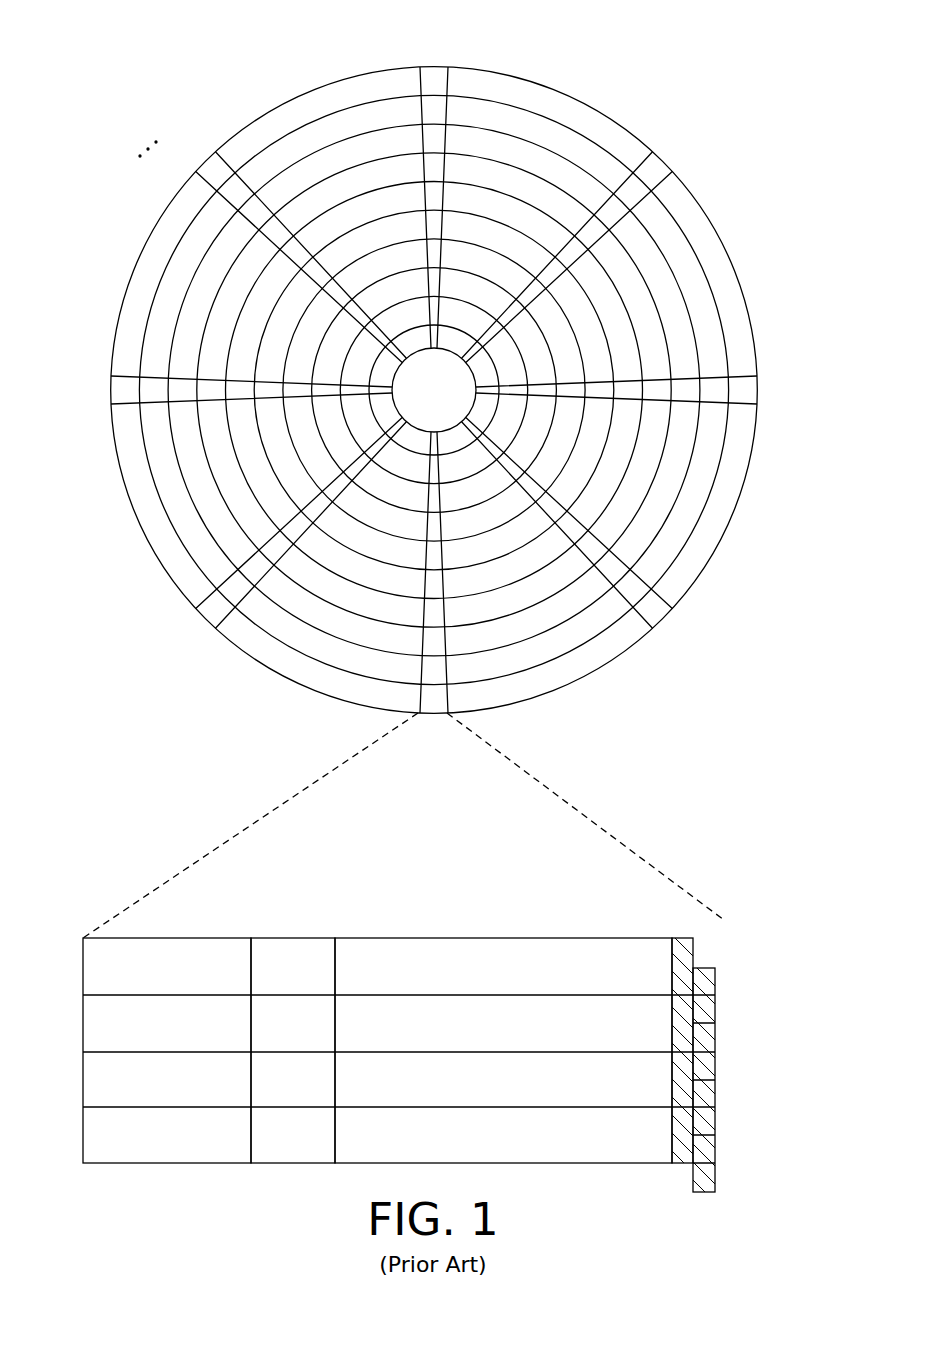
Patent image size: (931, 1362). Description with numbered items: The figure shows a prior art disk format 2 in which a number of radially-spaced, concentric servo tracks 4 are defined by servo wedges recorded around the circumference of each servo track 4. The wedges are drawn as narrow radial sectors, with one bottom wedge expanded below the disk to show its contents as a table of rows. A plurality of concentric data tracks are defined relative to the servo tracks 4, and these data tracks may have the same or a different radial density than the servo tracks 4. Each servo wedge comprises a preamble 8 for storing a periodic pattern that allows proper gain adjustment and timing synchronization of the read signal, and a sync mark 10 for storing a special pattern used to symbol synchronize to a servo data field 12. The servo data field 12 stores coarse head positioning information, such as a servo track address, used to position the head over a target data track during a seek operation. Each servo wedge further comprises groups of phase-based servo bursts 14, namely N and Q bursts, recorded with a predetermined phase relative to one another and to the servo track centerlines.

The disk format 2 is at (197, 71).
The servo tracks 4 is at (543, 132).
The preamble 8 is at (173, 938).
The sync mark 10 is at (290, 938).
The servo data field 12 is at (490, 938).
The servo bursts 14 is at (708, 938).